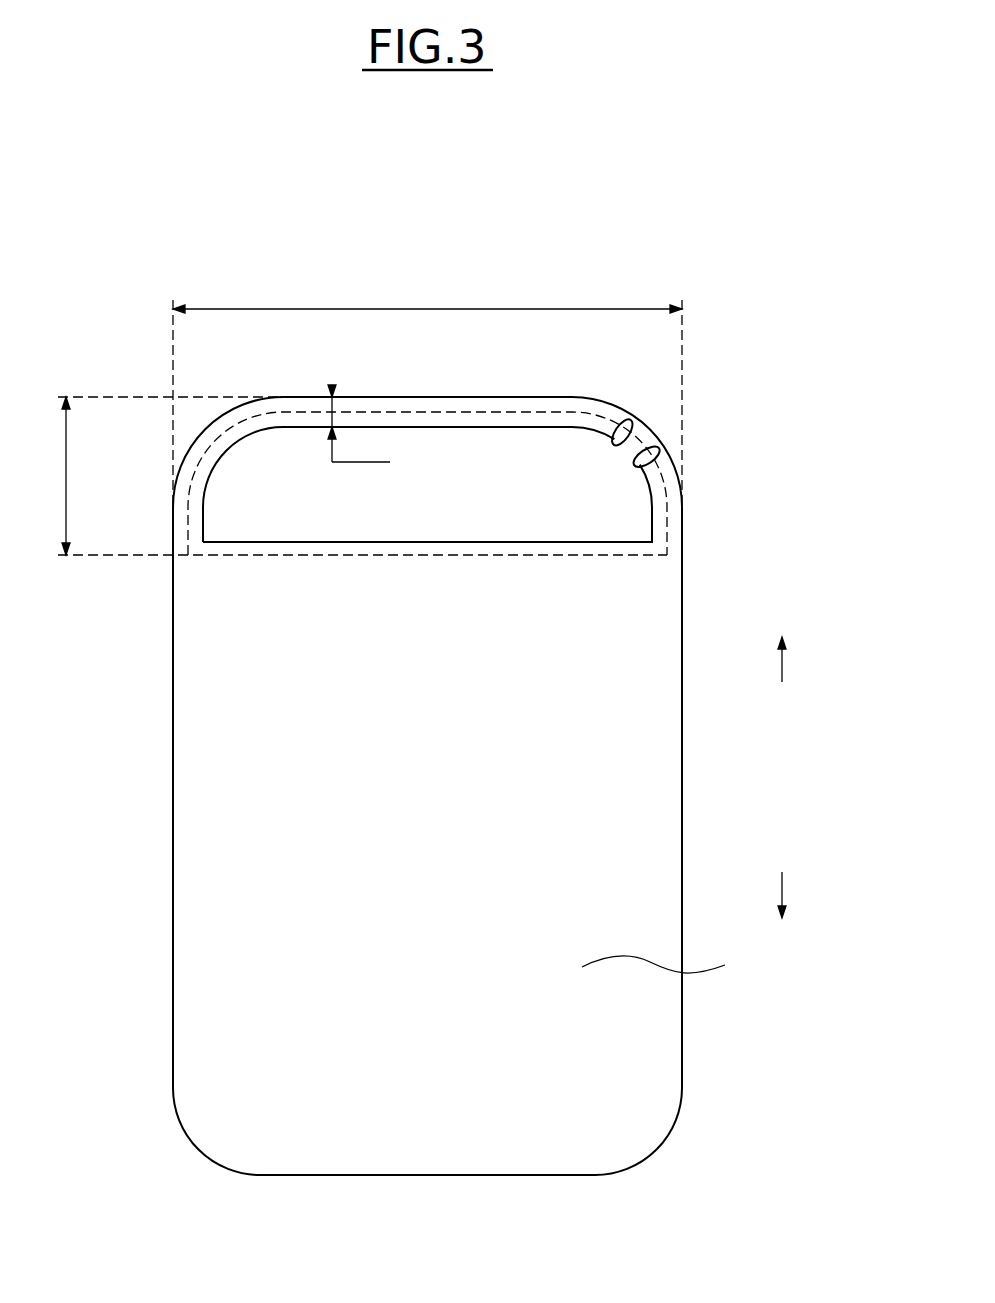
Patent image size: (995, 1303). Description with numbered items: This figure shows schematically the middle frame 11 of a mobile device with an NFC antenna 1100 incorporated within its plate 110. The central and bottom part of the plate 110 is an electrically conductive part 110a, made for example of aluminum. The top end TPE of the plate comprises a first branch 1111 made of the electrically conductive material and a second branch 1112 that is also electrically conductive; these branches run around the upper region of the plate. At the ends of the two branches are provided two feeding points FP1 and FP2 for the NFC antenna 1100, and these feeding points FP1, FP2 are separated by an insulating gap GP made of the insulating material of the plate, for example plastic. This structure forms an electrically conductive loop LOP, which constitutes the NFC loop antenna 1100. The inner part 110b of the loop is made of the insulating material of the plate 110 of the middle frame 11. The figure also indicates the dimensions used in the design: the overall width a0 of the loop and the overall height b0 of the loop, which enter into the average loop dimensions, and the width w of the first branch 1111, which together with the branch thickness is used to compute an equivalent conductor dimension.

The middle frame 11 is at (776, 388).
The plate 110 is at (696, 796).
The electrically conductive part 110a is at (682, 966).
The inner part of the loop 110b is at (452, 498).
The NFC antenna 1100 is at (662, 369).
The first branch 1111 is at (428, 402).
The second branch 1112 is at (675, 530).
The first feeding point FP1 is at (628, 427).
The second feeding point FP2 is at (656, 455).
The insulating gap GP is at (628, 452).
The top end of the plate TPE is at (182, 386).
The electrically conductive loop LOP is at (177, 532).
The overall width of the loop a0 is at (427, 391).
The overall height of the loop b0 is at (53, 476).
The width of the branch w is at (359, 423).